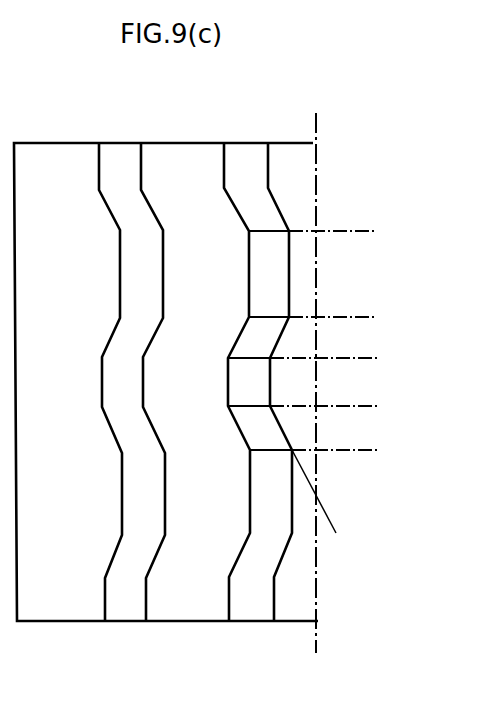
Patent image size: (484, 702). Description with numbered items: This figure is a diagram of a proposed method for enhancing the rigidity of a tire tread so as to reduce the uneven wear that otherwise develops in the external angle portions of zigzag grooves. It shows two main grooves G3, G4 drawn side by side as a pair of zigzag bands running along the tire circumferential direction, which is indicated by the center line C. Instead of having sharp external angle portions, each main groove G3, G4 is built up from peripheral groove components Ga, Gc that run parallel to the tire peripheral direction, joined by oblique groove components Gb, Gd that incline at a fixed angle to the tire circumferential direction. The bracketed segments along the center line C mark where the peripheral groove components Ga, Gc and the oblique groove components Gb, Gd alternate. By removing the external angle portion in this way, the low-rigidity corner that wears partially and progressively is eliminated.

The main groove G3 is at (108, 152).
The main groove G4 is at (242, 158).
The center line C is at (311, 366).
The peripheral groove component Ga is at (367, 231).
The oblique groove component Gb is at (367, 318).
The peripheral groove component Gc is at (367, 358).
The oblique groove component Gd is at (367, 406).